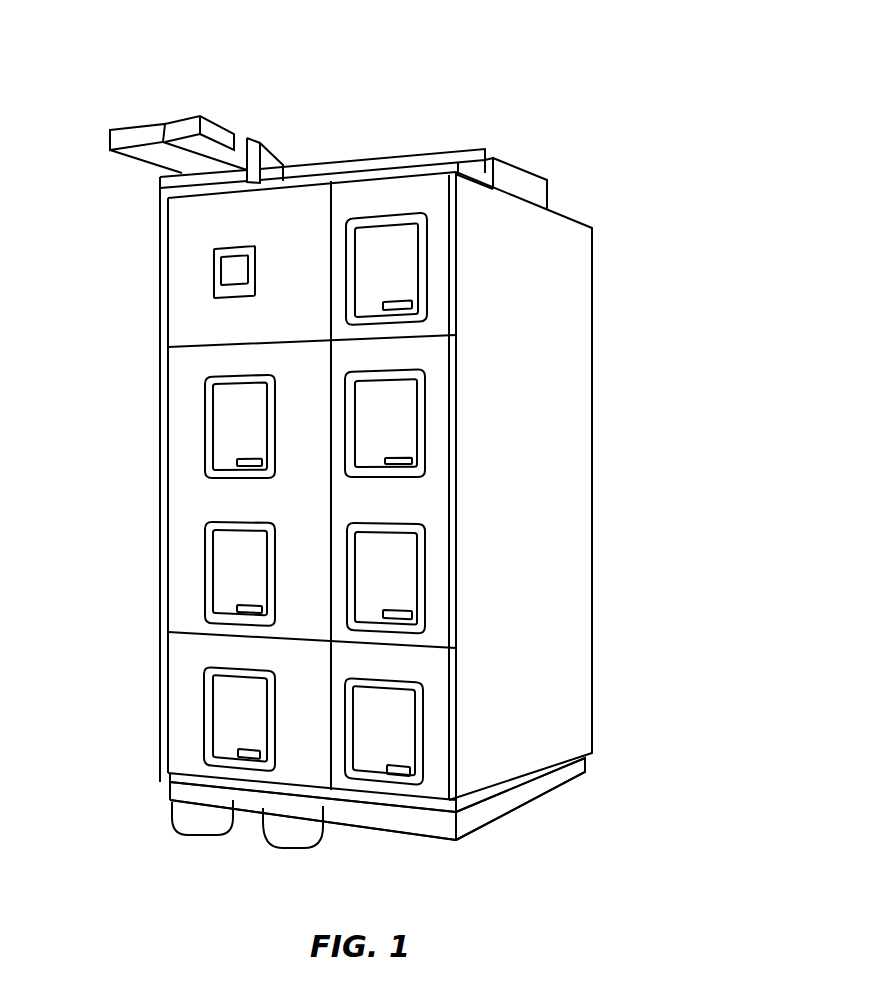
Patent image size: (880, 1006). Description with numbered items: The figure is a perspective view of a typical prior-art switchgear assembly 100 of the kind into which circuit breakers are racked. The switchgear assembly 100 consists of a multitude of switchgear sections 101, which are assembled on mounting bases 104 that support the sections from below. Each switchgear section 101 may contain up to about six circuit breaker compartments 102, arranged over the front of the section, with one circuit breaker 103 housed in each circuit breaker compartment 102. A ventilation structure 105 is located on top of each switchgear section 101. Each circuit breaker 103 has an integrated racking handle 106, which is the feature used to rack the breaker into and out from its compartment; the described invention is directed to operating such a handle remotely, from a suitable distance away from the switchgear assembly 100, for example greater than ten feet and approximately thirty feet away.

The switchgear assembly 100 is at (422, 117).
The switchgear section 101 is at (262, 798).
The circuit breaker compartment 102 is at (203, 420).
The circuit breaker 103 is at (212, 558).
The mounting base 104 is at (170, 788).
The ventilation structure 105 is at (520, 167).
The integrated racking handle 106 is at (237, 607).